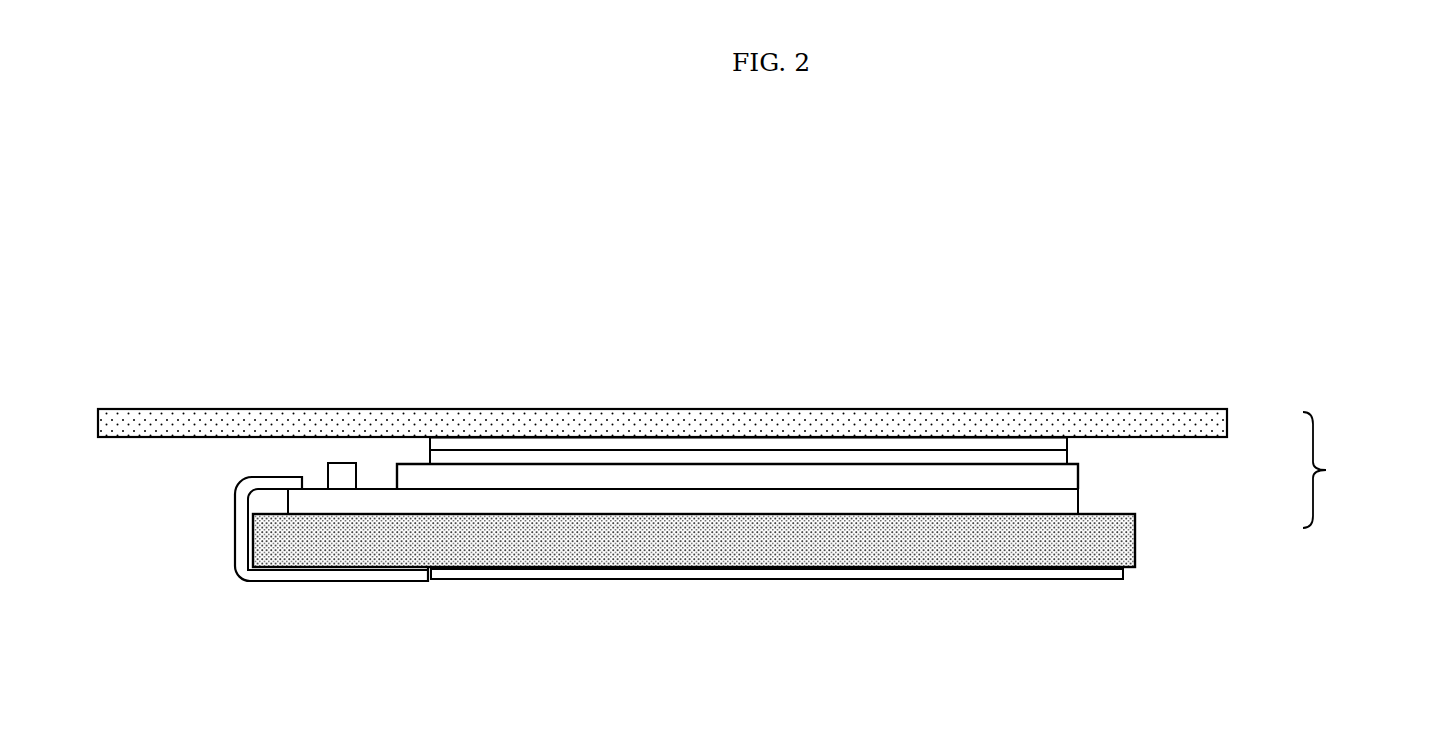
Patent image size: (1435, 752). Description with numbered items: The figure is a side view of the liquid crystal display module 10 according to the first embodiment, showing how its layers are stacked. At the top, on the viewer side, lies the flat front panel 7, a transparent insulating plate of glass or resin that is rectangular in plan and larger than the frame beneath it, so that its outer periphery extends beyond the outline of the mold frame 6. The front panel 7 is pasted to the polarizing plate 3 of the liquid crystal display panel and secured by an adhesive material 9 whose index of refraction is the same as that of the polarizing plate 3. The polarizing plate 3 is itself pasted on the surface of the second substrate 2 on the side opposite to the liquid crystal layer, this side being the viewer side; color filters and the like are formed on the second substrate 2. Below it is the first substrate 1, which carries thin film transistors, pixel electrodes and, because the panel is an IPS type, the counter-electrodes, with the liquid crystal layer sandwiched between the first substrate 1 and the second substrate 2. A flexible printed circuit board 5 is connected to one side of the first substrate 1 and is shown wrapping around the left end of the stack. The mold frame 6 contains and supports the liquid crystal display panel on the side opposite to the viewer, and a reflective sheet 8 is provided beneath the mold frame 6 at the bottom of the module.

The liquid crystal display module 10 is at (402, 391).
The front panel 7 is at (928, 420).
The adhesive material 9 is at (1047, 438).
The polarizing plate 3 is at (1058, 458).
The second substrate 2 is at (1062, 476).
The first substrate 1 is at (1068, 498).
The mold frame 6 is at (1107, 543).
The reflective sheet 8 is at (1085, 577).
The flexible printed circuit board 5 is at (268, 573).